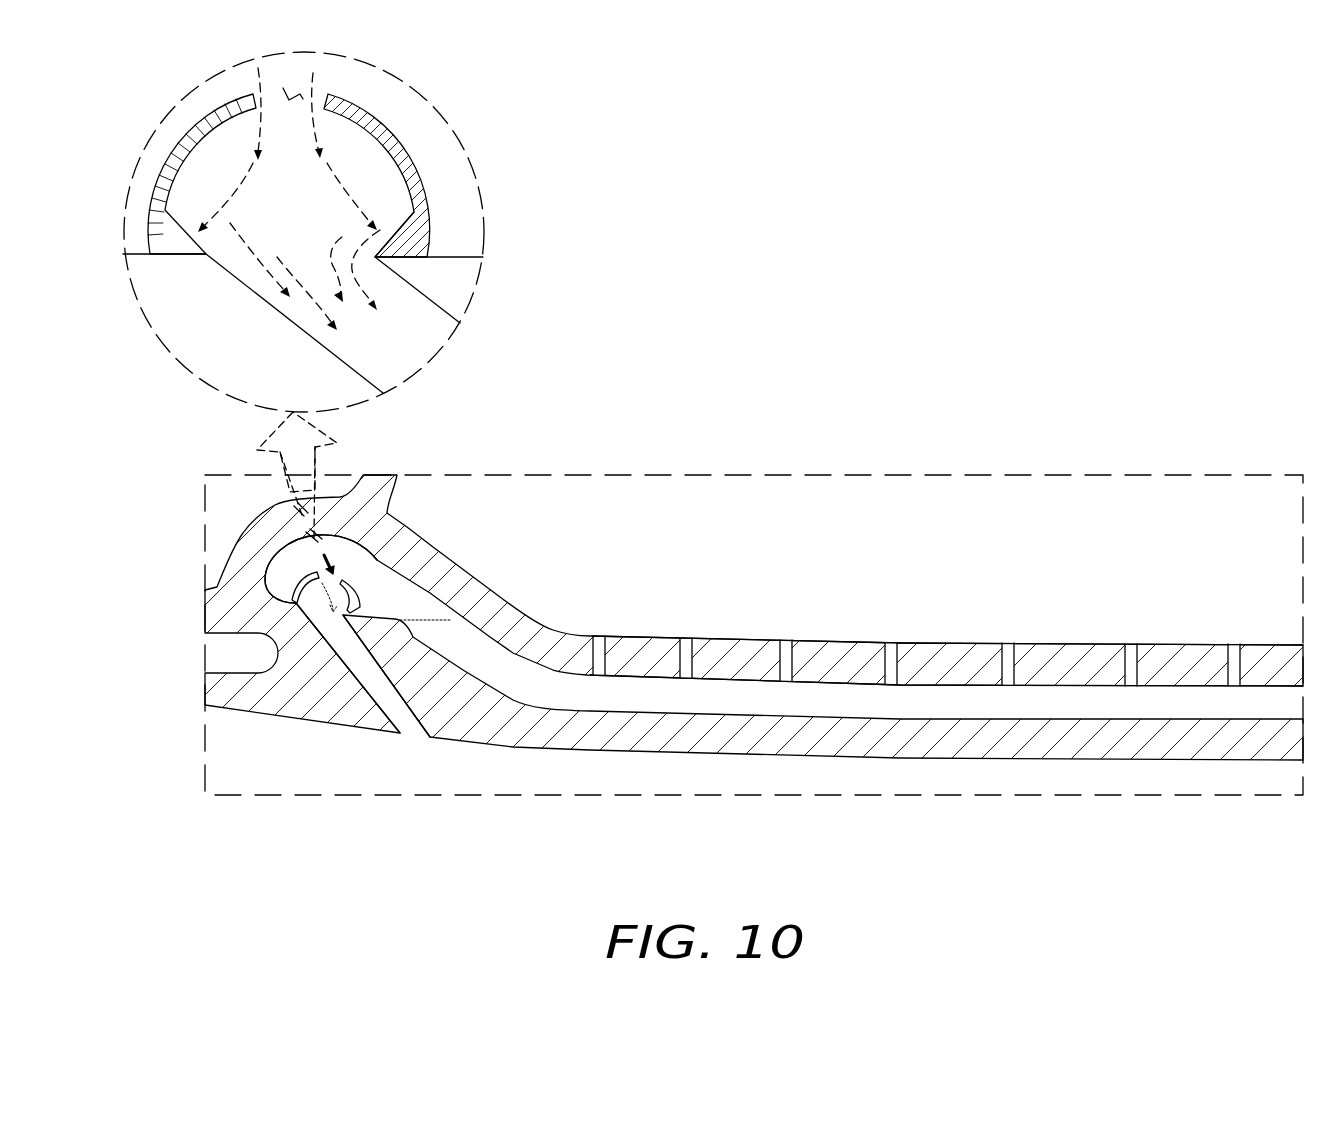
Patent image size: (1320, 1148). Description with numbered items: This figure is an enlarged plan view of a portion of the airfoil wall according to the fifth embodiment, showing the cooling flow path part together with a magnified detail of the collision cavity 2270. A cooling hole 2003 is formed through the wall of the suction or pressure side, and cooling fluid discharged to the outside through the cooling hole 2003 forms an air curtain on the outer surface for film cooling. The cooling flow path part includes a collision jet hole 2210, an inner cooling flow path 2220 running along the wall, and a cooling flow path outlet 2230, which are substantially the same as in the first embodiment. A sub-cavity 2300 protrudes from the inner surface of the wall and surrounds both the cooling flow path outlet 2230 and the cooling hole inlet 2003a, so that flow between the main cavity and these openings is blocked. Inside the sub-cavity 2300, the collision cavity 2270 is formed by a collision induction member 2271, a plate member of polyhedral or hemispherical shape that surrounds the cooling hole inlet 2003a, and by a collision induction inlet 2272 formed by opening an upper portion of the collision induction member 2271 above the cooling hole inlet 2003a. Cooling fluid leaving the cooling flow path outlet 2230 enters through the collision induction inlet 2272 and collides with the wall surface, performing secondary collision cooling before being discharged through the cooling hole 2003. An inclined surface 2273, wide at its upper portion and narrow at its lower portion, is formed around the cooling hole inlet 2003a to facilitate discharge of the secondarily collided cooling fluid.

The cooling hole 2003 is at (405, 722).
The cooling hole inlet 2003a is at (305, 582).
The collision jet hole 2210 is at (790, 637).
The inner cooling flow path 2220 is at (888, 705).
The cooling flow path outlet 2230 is at (440, 617).
The collision cavity 2270 is at (400, 219).
The collision induction member 2271 is at (393, 140).
The collision induction inlet 2272 is at (297, 102).
The inclined surface 2273 is at (383, 217).
The sub-cavity 2300 is at (379, 588).